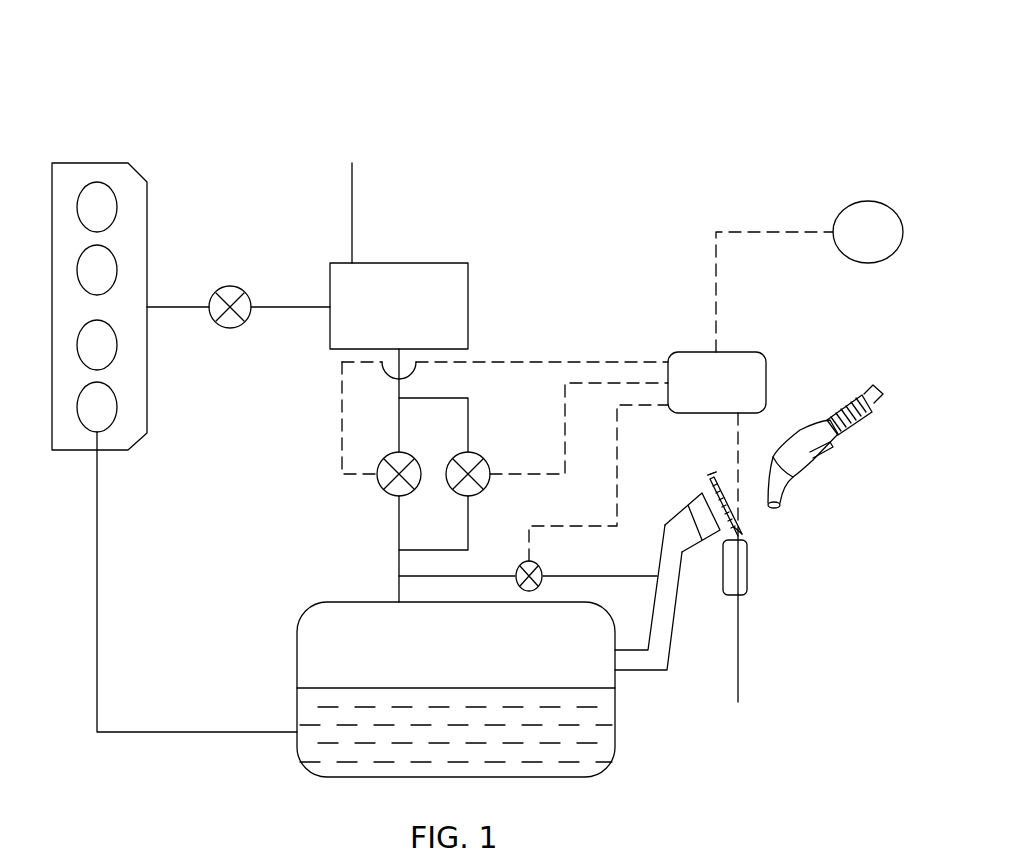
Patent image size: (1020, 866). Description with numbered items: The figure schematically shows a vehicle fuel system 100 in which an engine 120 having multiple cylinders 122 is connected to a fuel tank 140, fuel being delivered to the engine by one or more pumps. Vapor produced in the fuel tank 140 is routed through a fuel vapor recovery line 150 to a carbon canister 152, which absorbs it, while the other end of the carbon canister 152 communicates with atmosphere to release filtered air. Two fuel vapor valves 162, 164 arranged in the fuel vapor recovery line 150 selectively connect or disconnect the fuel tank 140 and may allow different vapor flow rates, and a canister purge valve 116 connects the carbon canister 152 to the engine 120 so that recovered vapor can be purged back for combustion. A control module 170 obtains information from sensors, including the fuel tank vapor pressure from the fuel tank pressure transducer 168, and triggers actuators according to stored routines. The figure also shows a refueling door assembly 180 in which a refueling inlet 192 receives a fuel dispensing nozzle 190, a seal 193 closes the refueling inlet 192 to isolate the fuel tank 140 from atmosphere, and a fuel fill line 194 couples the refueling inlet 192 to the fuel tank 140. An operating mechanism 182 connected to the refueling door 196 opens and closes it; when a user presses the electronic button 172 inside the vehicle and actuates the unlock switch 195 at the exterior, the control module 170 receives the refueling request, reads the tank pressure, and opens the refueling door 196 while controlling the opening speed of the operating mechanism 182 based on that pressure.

The vehicle fuel system 100 is at (598, 33).
The canister purge valve 116 is at (235, 287).
The engine 120 is at (125, 156).
The cylinders 122 is at (107, 208).
The fuel tank 140 is at (600, 752).
The fuel vapor recovery line 150 is at (398, 527).
The carbon canister 152 is at (418, 263).
The fuel vapor valve 162 is at (399, 452).
The fuel vapor valve 164 is at (468, 452).
The fuel tank pressure transducer (FTPT) 168 is at (526, 562).
The control module 170 is at (726, 352).
The electronic button 172 is at (851, 202).
The refueling door assembly 180 is at (759, 670).
The operating mechanism 182 is at (750, 575).
The fuel dispensing nozzle 190 is at (806, 466).
The refueling inlet 192 is at (712, 497).
The seal 193 is at (698, 508).
The fuel fill line 194 is at (663, 622).
The unlock switch 195 is at (715, 480).
The refueling door 196 is at (735, 517).